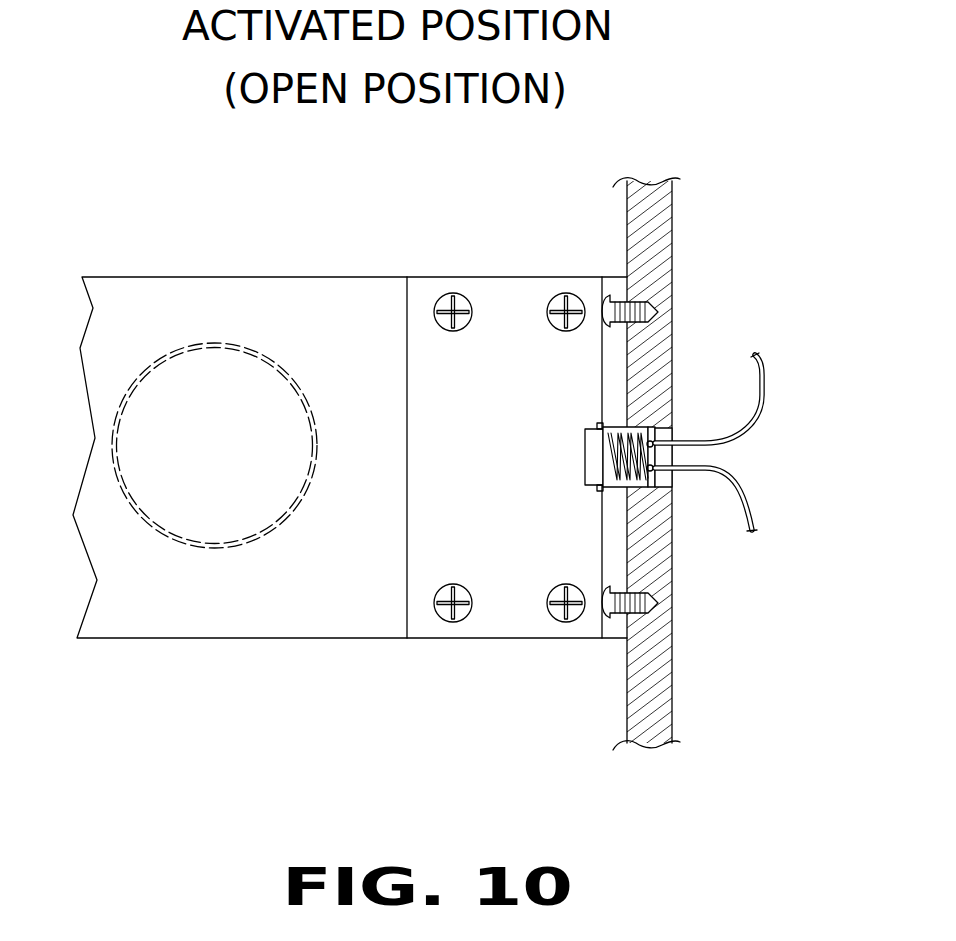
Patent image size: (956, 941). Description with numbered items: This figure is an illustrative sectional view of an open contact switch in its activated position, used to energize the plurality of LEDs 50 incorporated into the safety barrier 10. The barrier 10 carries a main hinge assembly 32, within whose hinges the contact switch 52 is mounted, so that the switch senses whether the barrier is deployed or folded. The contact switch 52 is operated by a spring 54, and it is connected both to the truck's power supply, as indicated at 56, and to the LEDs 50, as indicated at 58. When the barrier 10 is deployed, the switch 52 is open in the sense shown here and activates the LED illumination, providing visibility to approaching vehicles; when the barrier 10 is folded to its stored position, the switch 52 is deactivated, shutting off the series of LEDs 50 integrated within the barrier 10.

The safety barrier 10 is at (312, 307).
The plurality of LEDs 50 is at (195, 392).
The main hinge assembly 32 is at (433, 533).
The contact switch 52 is at (590, 480).
The spring 54 is at (627, 437).
The connection to truck's power supply 56 is at (741, 510).
The connection to LEDs 58 is at (758, 353).